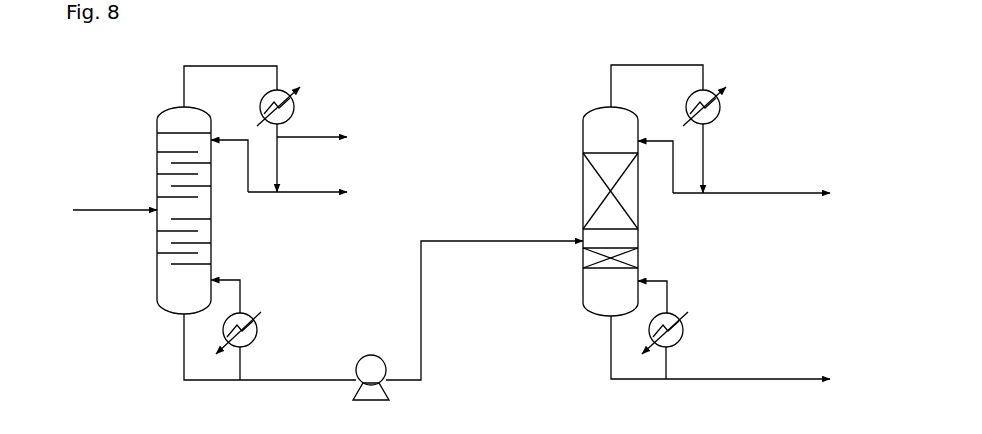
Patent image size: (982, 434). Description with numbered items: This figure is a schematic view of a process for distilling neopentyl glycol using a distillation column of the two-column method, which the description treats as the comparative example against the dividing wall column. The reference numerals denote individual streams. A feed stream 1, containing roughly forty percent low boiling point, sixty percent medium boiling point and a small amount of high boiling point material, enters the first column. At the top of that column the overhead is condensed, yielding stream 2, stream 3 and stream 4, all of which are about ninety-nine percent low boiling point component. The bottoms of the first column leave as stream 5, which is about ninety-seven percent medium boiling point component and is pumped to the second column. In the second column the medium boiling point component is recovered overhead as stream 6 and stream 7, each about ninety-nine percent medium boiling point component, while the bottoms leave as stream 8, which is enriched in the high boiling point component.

The stream 1 is at (115, 196).
The stream 2 is at (229, 152).
The stream 3 is at (312, 124).
The stream 4 is at (297, 158).
The stream 5 is at (383, 306).
The stream 6 is at (655, 153).
The stream 7 is at (751, 158).
The stream 8 is at (720, 347).